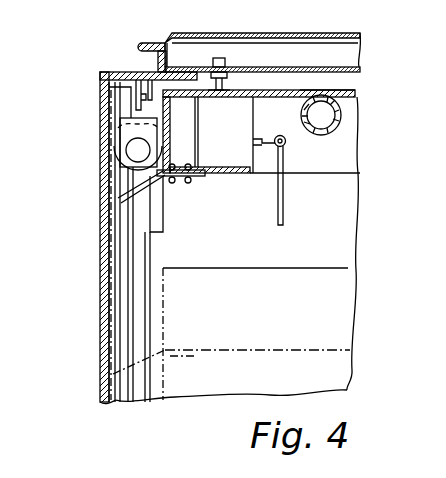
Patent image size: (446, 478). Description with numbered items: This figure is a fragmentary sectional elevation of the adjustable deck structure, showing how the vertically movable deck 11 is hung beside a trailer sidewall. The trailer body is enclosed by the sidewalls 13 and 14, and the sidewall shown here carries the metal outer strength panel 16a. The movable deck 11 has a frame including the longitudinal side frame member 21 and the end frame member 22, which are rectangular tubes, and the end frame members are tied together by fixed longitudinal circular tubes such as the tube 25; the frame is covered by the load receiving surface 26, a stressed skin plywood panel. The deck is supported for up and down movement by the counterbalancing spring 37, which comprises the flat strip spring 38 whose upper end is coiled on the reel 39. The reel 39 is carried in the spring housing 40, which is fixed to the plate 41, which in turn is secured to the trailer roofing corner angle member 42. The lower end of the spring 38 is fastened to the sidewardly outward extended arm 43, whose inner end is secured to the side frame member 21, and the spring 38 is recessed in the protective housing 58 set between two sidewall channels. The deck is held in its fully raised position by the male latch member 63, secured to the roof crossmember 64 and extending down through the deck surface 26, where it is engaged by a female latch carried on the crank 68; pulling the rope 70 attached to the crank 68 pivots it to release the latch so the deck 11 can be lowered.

The vertically movable deck 11 is at (343, 179).
The sidewall 13 is at (246, 50).
The sidewall 14 is at (103, 229).
The outer strength panel 16a is at (103, 263).
The longitudinal side frame member 21 is at (200, 112).
The end frame member 22 is at (358, 155).
The longitudinal circular tube 25 is at (343, 121).
The load receiving surface 26 is at (350, 90).
The counterbalancing spring 37 is at (207, 185).
The flat strip spring 38 is at (115, 186).
The reel 39 is at (114, 150).
The spring housing 40 is at (122, 124).
The plate 41 is at (146, 92).
The trailer roofing corner angle member 42 is at (115, 70).
The outward extended arm 43 is at (148, 186).
The protective housing 58 is at (96, 206).
The male latch member 63 is at (238, 79).
The roof crossmember 64 is at (218, 57).
The crank 68 is at (273, 143).
The rope 70 is at (286, 194).